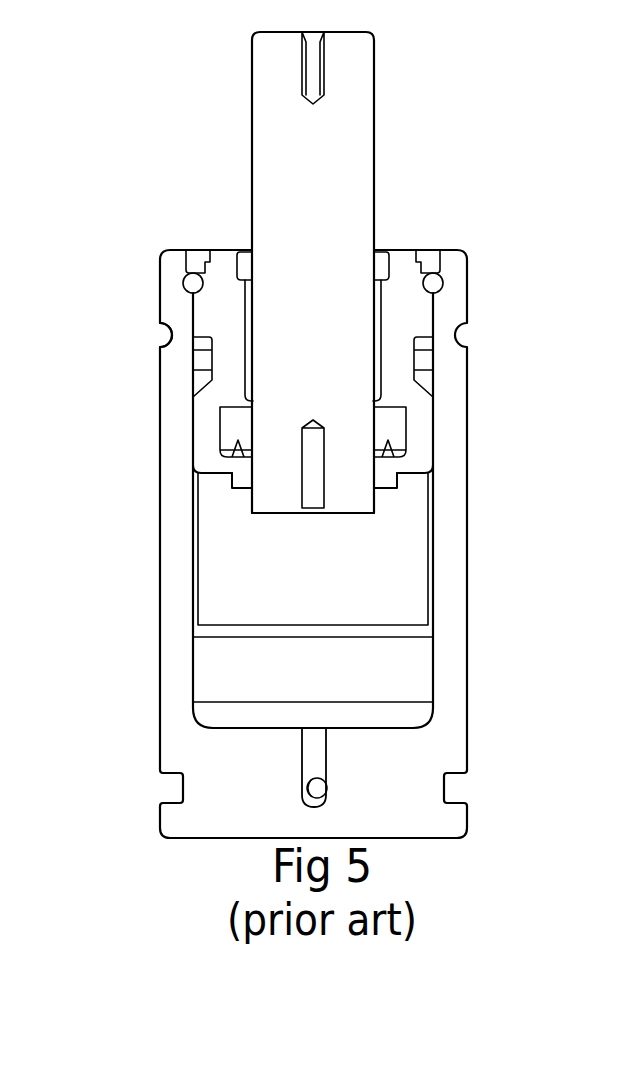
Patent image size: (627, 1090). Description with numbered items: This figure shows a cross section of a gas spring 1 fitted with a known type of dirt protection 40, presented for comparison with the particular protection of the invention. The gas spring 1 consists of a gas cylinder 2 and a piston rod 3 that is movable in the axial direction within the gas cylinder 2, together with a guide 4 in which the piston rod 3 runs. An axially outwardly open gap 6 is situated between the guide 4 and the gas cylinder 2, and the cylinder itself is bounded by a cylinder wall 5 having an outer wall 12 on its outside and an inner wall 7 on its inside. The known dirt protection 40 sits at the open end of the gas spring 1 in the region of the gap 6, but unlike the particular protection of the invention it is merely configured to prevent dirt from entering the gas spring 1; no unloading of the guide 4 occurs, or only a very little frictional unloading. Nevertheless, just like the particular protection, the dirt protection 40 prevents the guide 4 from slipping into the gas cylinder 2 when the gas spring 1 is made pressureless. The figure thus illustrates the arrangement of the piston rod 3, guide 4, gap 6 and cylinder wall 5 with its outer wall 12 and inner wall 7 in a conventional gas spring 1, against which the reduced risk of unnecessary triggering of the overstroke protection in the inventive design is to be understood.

The gas spring 1 is at (462, 141).
The gas cylinder 2 is at (468, 613).
The piston rod 3 is at (343, 117).
The guide 4 is at (400, 312).
The cylinder wall 5 is at (178, 492).
The gap 6 is at (433, 262).
The inner wall 7 is at (439, 440).
The outer wall 12 is at (156, 297).
The dirt protection 40 is at (192, 262).